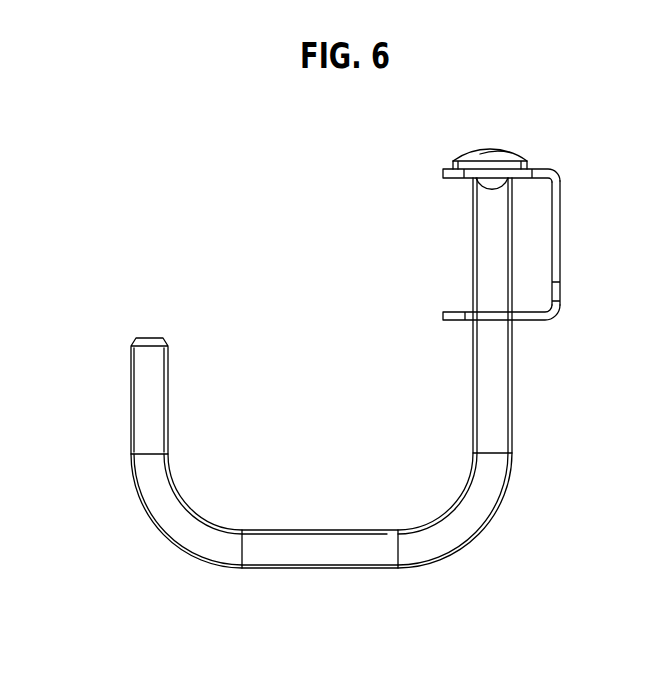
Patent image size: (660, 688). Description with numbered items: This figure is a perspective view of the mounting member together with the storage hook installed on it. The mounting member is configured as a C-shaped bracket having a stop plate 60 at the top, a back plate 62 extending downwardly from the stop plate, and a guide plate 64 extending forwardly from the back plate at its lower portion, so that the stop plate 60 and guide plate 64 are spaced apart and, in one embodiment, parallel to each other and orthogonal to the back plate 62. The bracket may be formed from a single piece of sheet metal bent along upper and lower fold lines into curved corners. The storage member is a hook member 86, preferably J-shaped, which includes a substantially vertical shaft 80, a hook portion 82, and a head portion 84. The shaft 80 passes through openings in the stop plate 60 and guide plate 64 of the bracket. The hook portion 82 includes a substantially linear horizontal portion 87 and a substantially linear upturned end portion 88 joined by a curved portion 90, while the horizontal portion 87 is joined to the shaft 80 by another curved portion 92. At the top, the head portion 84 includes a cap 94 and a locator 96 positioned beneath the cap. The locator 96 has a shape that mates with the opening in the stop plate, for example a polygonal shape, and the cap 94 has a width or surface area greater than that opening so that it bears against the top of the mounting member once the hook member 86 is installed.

The stop plate 60 is at (538, 170).
The back plate 62 is at (562, 236).
The guide plate 64 is at (533, 322).
The shaft 80 is at (500, 360).
The hook portion 82 is at (207, 543).
The head portion 84 is at (496, 150).
The hook member 86 is at (320, 522).
The horizontal portion 87 is at (345, 557).
The end portion 88 is at (142, 378).
The curved portion 90 is at (168, 525).
The curved portion 92 is at (468, 517).
The cap 94 is at (460, 160).
The locator 96 is at (472, 182).